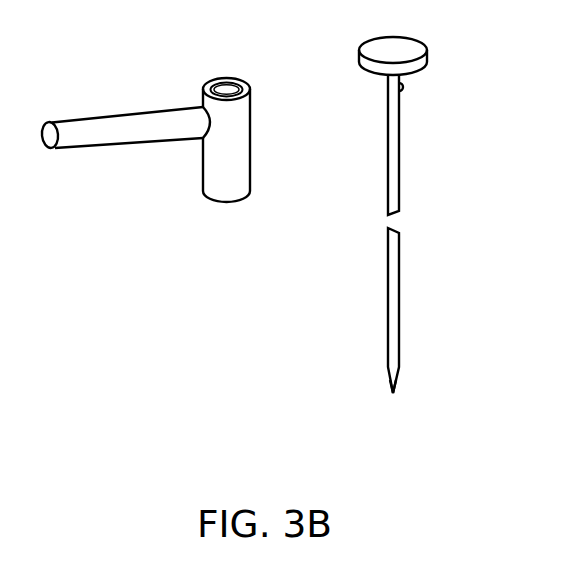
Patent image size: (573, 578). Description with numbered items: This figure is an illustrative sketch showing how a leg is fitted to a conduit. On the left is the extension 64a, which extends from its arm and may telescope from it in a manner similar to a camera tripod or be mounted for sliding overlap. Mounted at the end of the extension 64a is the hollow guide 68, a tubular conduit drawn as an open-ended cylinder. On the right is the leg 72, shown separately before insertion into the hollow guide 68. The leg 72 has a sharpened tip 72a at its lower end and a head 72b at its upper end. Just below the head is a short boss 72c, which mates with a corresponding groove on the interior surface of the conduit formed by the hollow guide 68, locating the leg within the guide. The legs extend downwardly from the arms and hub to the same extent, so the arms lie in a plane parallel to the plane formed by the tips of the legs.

The extension 64a is at (136, 145).
The hollow guide 68 is at (250, 163).
The leg 72 is at (399, 290).
The sharpened tip 72a is at (393, 393).
The head 72b is at (428, 58).
The short boss 72c is at (403, 87).